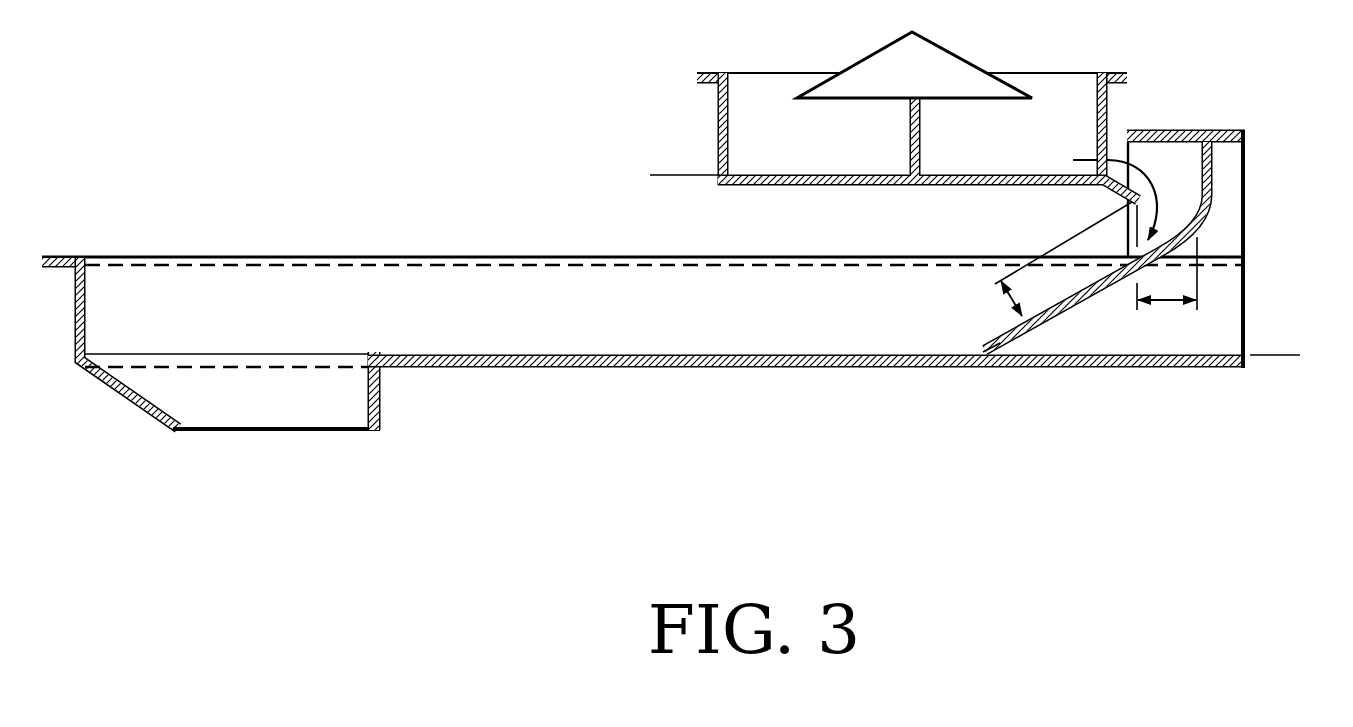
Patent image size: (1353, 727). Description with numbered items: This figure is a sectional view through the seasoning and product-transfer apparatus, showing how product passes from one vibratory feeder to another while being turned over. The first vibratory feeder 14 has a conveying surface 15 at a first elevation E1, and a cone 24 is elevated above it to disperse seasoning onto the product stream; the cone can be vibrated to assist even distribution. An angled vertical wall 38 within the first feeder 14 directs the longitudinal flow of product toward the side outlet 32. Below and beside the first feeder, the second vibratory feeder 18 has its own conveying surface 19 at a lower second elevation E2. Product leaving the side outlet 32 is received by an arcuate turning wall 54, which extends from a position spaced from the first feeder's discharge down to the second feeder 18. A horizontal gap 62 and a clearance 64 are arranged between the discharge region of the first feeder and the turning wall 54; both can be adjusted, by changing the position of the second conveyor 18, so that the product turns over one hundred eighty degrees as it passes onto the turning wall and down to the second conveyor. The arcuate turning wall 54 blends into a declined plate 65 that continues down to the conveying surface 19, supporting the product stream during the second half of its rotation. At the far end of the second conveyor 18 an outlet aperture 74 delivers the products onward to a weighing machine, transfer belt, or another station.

The first vibratory feeder 14 is at (716, 109).
The angled vertical wall 38 is at (777, 122).
The cone 24 is at (967, 60).
The side outlet 32 is at (1102, 142).
The first elevation E1 is at (659, 177).
The conveying surface 15 is at (813, 176).
The second vibratory feeder 18 is at (403, 255).
The arcuate turning wall 54 is at (1180, 198).
The clearance 64 is at (1008, 297).
The horizontal gap 62 is at (1168, 305).
The second elevation E2 is at (1298, 357).
The conveying surface 19 is at (585, 355).
The declined plate 65 is at (995, 352).
The outlet aperture 74 is at (369, 413).